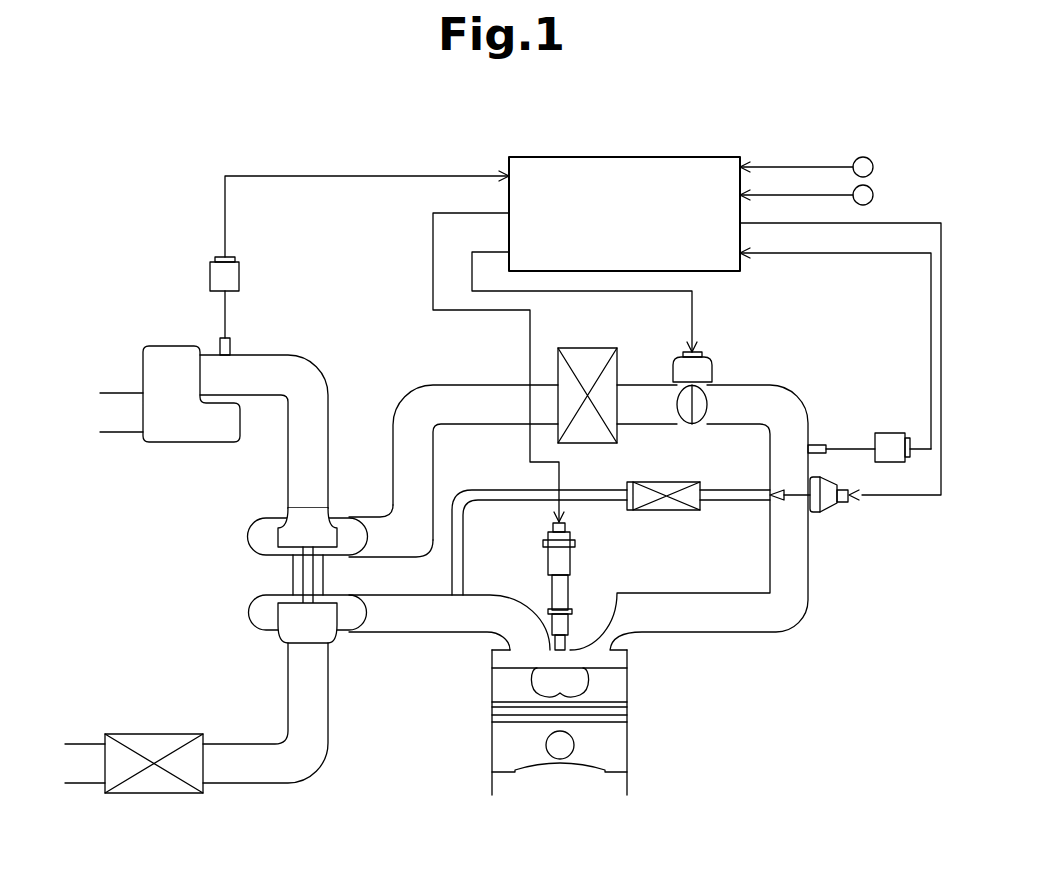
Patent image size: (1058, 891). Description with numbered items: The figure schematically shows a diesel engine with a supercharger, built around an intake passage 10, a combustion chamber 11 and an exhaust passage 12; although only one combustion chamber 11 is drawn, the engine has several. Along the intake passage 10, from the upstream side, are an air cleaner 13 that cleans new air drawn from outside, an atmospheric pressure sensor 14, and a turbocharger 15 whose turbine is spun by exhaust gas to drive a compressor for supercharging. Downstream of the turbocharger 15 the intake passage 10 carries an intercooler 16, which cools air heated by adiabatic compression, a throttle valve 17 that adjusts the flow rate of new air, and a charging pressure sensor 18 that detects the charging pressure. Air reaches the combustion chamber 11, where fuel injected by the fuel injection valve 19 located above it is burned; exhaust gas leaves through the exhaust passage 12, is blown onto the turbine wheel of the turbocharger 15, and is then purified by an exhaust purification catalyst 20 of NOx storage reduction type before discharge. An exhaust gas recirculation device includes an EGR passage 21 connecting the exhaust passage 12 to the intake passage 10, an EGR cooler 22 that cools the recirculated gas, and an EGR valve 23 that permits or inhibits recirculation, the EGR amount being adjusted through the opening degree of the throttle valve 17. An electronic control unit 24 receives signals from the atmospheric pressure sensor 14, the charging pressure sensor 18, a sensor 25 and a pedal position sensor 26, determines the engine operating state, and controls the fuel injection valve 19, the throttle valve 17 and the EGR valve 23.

The intake passage 10 is at (465, 384).
The combustion chamber 11 is at (592, 660).
The exhaust passage 12 is at (398, 635).
The air cleaner 13 is at (182, 443).
The atmospheric pressure sensor 14 is at (240, 276).
The turbocharger 15 is at (248, 613).
The intercooler 16 is at (586, 347).
The throttle valve 17 is at (713, 368).
The charging pressure sensor 18 is at (886, 431).
The fuel injection valve 19 is at (572, 562).
The exhaust purification catalyst 20 is at (168, 795).
The EGR passage 21 is at (483, 502).
The EGR cooler 22 is at (662, 480).
The EGR valve 23 is at (828, 513).
The electronic control unit 24 is at (659, 155).
The accelerator sensor 25 is at (873, 167).
The pedal position sensor 26 is at (873, 195).